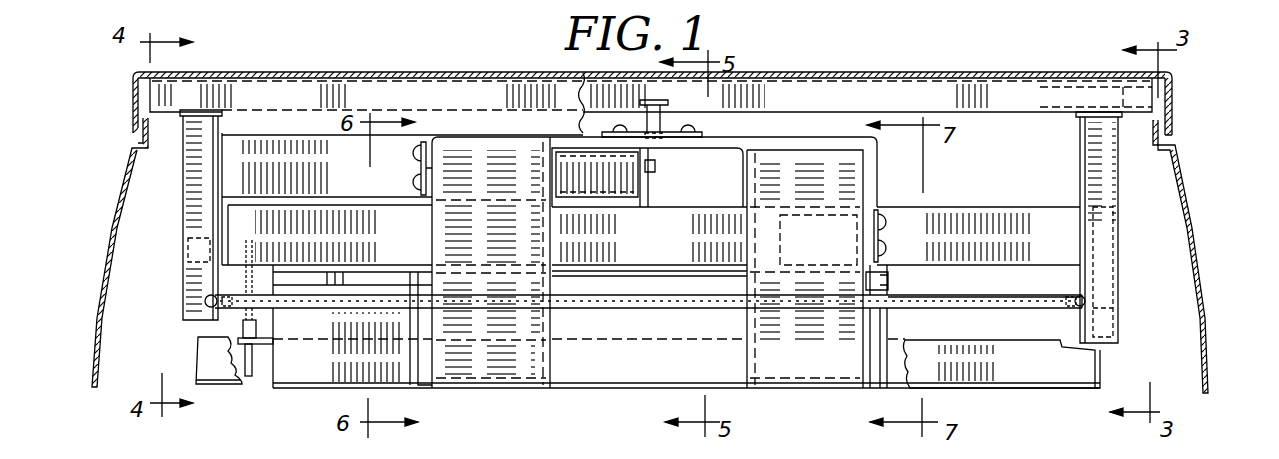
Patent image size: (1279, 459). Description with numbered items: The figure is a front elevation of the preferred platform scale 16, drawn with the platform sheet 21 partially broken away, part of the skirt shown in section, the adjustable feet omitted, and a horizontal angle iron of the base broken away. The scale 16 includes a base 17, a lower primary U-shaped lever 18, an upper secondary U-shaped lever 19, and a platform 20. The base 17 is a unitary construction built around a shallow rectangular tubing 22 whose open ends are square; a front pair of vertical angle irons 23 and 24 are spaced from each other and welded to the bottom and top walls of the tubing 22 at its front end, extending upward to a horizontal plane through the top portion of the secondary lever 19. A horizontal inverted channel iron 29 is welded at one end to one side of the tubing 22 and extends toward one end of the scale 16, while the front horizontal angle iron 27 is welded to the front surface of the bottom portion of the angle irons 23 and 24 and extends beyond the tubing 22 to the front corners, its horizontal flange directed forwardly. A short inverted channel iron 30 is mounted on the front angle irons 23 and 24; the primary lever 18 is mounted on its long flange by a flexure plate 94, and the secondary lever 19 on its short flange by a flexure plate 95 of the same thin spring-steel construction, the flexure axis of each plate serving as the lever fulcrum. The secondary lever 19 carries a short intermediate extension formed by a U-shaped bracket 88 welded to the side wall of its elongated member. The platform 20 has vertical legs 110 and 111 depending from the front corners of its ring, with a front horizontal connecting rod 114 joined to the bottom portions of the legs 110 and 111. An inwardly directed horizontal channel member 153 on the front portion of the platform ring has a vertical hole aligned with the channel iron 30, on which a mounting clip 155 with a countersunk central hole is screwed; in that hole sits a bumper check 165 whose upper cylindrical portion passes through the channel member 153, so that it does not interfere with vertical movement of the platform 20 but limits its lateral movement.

The platform scale 16 is at (1196, 163).
The base 17 is at (285, 402).
The lower primary U-shaped lever 18 is at (978, 203).
The upper secondary U-shaped lever 19 is at (240, 130).
The platform 20 is at (180, 174).
The platform sheet 21 is at (664, 209).
The shallow rectangular tubing 22 is at (888, 322).
The front vertical angle iron 23 is at (550, 328).
The front vertical angle iron 24 is at (745, 316).
The front horizontal angle iron 27 is at (198, 358).
The horizontal inverted channel iron 29 is at (318, 390).
The front short inverted channel iron 30 is at (768, 138).
The U-shaped bracket 88 is at (650, 178).
The flexure plate 94 is at (885, 248).
The flexure plate 95 is at (418, 168).
The vertical leg 110 is at (205, 301).
The vertical leg 111 is at (1116, 262).
The front horizontal connecting rod 114 is at (985, 307).
The horizontal channel member 153 is at (615, 78).
The mounting clip 155 is at (700, 133).
The bumper check 165 is at (662, 122).